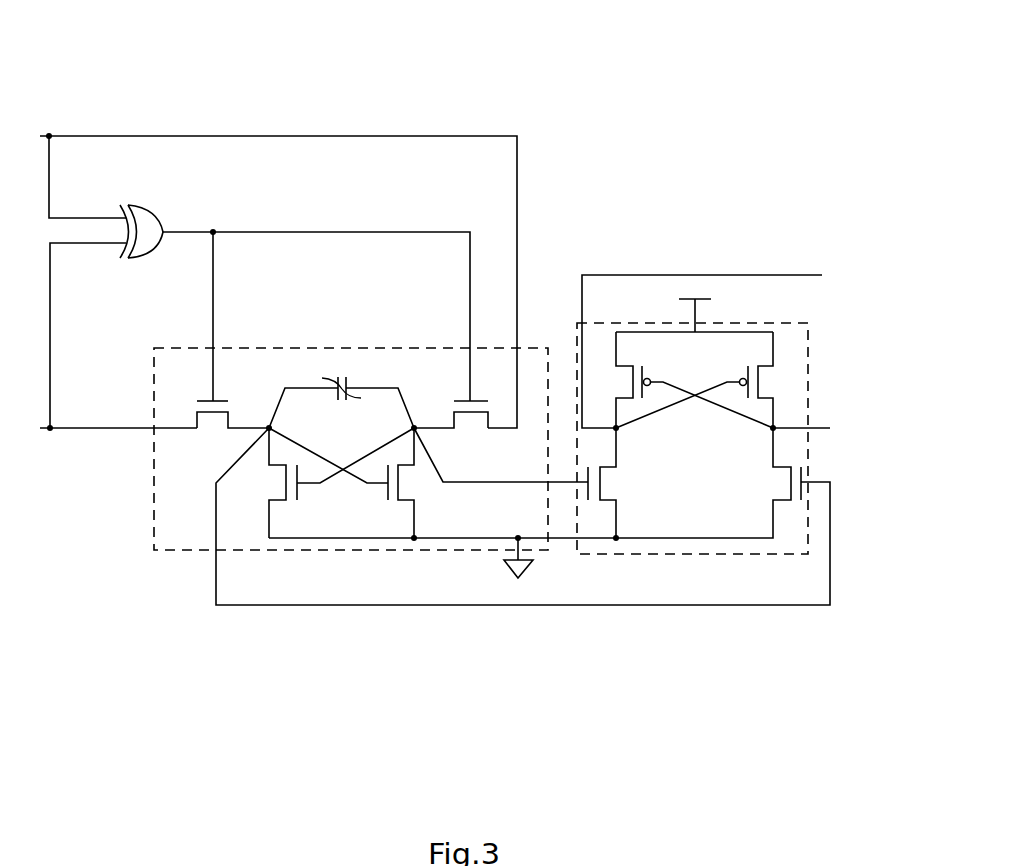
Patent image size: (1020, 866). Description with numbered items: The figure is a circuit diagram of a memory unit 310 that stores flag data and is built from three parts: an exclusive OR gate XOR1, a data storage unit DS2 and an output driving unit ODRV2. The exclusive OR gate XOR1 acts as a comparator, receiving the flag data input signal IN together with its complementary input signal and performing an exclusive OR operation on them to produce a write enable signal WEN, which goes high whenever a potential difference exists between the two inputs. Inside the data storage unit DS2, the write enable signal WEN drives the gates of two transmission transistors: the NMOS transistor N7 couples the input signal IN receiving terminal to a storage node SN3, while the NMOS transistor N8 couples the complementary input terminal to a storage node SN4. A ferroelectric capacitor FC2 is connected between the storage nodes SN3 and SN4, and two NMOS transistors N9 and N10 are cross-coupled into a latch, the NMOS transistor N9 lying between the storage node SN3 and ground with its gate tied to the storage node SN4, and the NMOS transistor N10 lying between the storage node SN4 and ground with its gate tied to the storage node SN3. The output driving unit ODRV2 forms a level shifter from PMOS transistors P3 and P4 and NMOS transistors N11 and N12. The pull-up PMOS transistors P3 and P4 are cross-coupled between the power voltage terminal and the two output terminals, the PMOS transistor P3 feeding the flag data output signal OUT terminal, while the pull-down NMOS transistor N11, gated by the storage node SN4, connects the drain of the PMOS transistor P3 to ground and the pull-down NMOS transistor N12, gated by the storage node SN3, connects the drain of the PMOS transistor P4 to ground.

The memory unit 310 is at (661, 84).
The flag data input signal IN is at (118, 350).
The exclusive OR gate XOR1 is at (140, 218).
The write enable signal WEN is at (316, 303).
The data storage unit DS2 is at (548, 348).
The NMOS transistor N7 is at (233, 421).
The NMOS transistor N8 is at (451, 421).
The ferroelectric capacitor FC2 is at (341, 388).
The NMOS transistor N9 is at (334, 483).
The NMOS transistor N10 is at (353, 483).
The storage node SN3 is at (523, 530).
The storage node SN4 is at (501, 455).
The output driving unit ODRV2 is at (808, 340).
The flag data output signal OUT is at (702, 339).
The PMOS transistor P3 is at (687, 380).
The PMOS transistor P4 is at (702, 380).
The NMOS transistor N11 is at (614, 483).
The NMOS transistor N12 is at (708, 483).